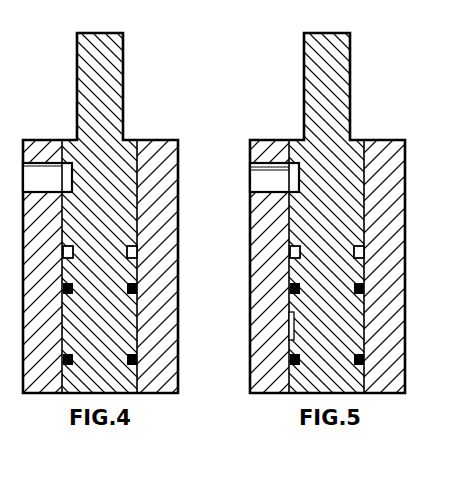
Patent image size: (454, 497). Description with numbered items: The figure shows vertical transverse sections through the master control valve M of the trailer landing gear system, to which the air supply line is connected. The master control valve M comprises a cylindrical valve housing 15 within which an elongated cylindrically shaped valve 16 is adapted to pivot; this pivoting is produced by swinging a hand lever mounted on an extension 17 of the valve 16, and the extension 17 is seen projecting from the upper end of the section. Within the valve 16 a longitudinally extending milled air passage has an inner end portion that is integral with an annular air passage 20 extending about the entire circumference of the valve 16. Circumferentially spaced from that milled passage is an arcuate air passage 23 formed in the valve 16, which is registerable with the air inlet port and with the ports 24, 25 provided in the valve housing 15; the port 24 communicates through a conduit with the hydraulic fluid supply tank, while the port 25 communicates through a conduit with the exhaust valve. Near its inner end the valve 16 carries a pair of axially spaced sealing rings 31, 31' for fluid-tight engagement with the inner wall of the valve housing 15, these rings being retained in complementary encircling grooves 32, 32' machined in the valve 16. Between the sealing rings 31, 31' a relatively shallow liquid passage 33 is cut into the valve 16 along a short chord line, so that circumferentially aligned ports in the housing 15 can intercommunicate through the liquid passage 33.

In FIG. 4, the valve housing 15 is at (160, 205).
In FIG. 5, the valve housing 15 is at (395, 208).
In FIG. 4, the valve 16 is at (128, 152).
In FIG. 5, the valve 16 is at (352, 152).
In FIG. 4, the extension 17 is at (105, 63).
In FIG. 5, the extension 17 is at (330, 70).
In FIG. 4, the annular air passage 20 is at (137, 252).
In FIG. 5, the annular air passage 20 is at (290, 250).
In FIG. 4, the arcuate air passage 23 is at (68, 175).
In FIG. 5, the arcuate air passage 23 is at (295, 175).
In FIG. 4, the port 24 is at (40, 178).
In FIG. 5, the port 25 is at (265, 178).
In FIG. 4, the sealing ring 31 is at (140, 296).
In FIG. 5, the sealing ring 31 is at (293, 293).
In FIG. 4, the groove 32 is at (140, 282).
In FIG. 5, the groove 32 is at (296, 286).
In FIG. 4, the sealing ring 31' is at (144, 371).
In FIG. 5, the sealing ring 31' is at (296, 368).
In FIG. 4, the groove 32' is at (142, 354).
In FIG. 5, the groove 32' is at (296, 359).
In FIG. 5, the liquid passage 33 is at (289, 326).
In FIG. 4, the master control valve M is at (170, 140).
In FIG. 5, the master control valve M is at (352, 50).